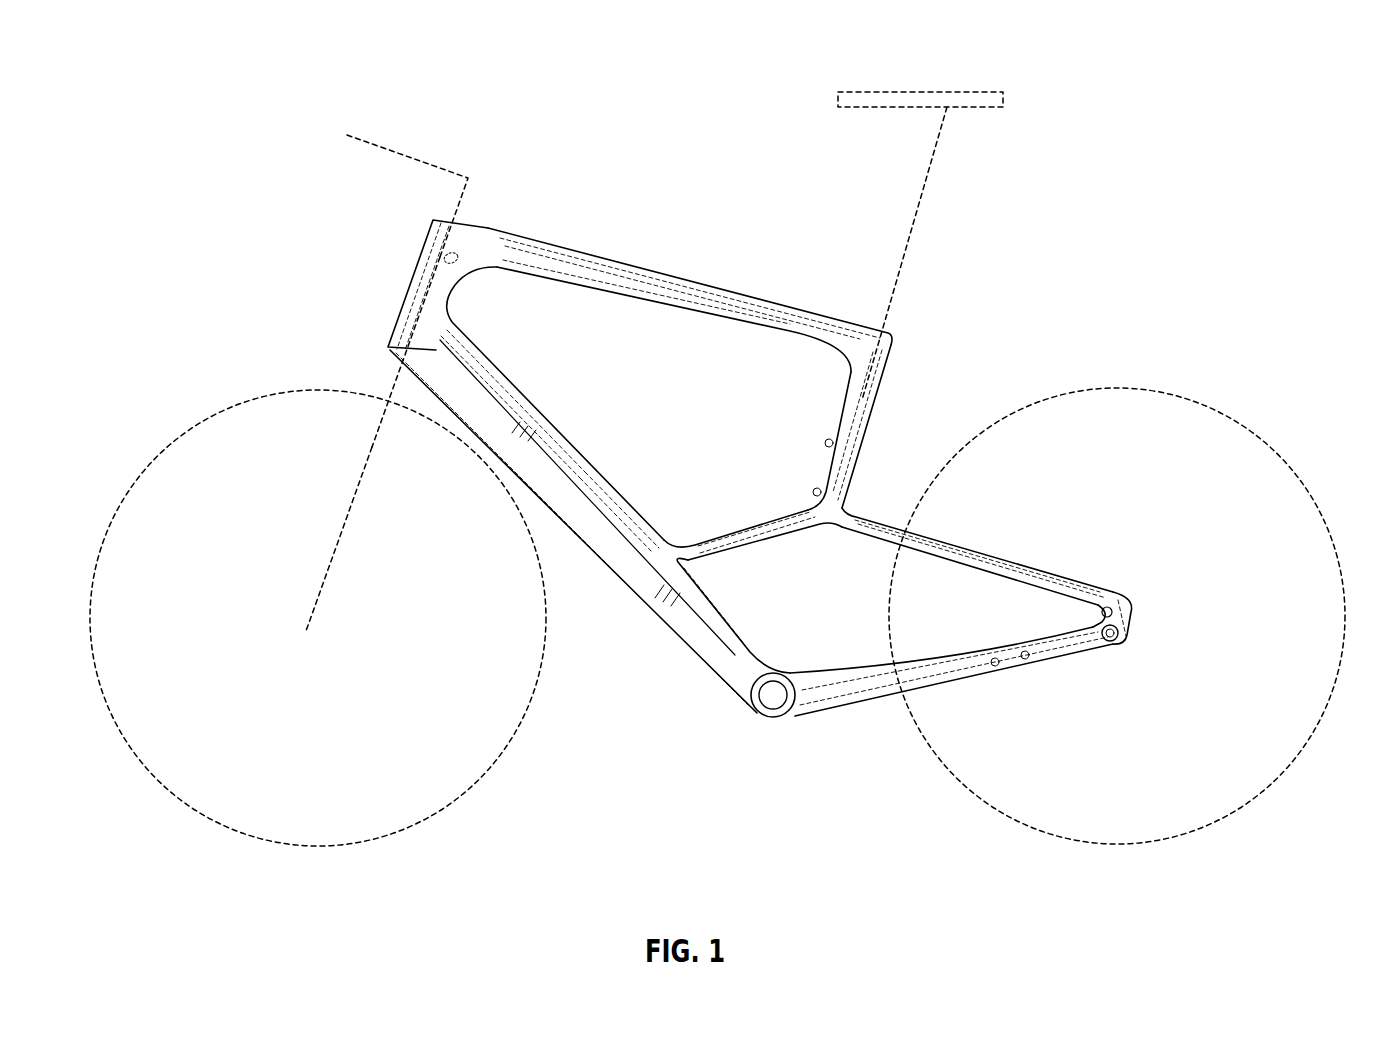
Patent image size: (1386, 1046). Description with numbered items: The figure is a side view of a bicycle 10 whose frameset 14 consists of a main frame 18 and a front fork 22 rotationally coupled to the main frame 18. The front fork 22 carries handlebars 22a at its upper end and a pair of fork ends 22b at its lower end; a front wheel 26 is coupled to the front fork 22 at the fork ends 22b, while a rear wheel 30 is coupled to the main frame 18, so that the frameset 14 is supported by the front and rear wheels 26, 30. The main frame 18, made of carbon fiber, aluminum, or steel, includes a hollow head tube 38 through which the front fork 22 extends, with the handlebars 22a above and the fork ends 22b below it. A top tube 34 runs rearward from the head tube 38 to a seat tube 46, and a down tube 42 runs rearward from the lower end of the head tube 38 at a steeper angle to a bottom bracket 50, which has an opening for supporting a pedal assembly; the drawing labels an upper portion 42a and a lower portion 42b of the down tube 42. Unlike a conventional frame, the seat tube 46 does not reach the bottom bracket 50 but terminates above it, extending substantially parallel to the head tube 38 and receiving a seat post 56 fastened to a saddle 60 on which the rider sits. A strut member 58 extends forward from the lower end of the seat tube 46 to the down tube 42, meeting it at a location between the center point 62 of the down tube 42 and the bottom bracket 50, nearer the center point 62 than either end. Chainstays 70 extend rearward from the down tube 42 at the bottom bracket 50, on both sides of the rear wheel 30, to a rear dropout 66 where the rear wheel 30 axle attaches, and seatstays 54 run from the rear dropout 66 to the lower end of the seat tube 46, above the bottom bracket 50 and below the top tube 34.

The bicycle 10 is at (1161, 143).
The frameset 14 is at (590, 184).
The main frame 18 is at (708, 679).
The front fork 22 is at (395, 377).
The handlebars 22a is at (413, 157).
The fork ends 22b is at (335, 545).
The front wheel 26 is at (505, 751).
The rear wheel 30 is at (1103, 844).
The top tube 34 is at (698, 288).
The head tube 38 is at (415, 268).
The down tube 42 is at (593, 490).
The down tube upper portion 42a is at (482, 385).
The down tube lower portion 42b is at (708, 625).
The seat tube 46 is at (862, 445).
The bottom bracket 50 is at (780, 717).
The seatstays 54 is at (1027, 562).
The seat post 56 is at (923, 182).
The strut member 58 is at (735, 540).
The saddle 60 is at (921, 93).
The center point 62 is at (593, 503).
The rear dropout 66 is at (1128, 623).
The chainstays 70 is at (943, 678).